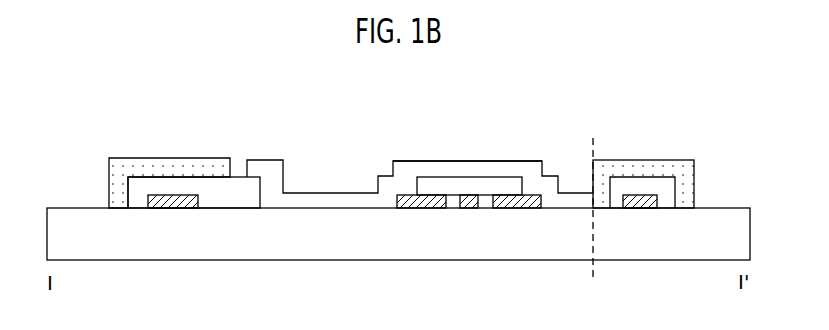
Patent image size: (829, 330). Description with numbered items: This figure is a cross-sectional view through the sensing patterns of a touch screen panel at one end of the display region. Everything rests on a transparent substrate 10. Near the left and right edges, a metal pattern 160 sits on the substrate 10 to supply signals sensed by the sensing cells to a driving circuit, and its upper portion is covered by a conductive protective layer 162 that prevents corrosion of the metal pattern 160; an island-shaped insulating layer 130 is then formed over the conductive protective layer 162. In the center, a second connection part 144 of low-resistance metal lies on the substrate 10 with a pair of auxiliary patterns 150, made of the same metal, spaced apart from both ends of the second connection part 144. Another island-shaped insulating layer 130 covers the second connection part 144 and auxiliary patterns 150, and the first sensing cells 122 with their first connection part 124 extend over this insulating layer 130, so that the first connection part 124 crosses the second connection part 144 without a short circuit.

The transparent substrate 10 is at (743, 232).
The first sensing cell 122 is at (322, 197).
The first connection part 124 is at (459, 169).
The insulating layer 130 is at (165, 172).
The second connection part 144 is at (473, 205).
The auxiliary pattern 150 is at (413, 205).
The metal pattern 160 is at (165, 204).
The conductive protective layer 162 is at (227, 204).